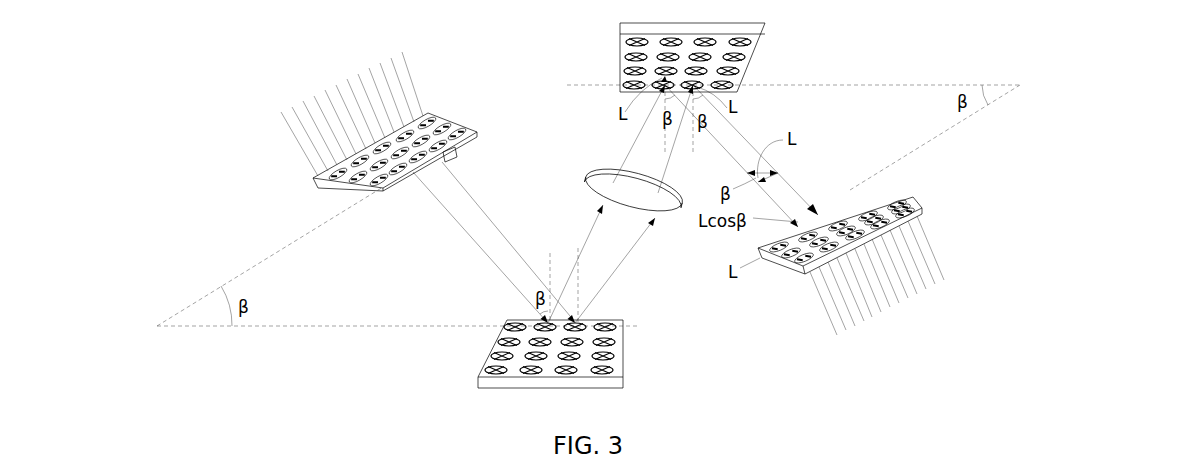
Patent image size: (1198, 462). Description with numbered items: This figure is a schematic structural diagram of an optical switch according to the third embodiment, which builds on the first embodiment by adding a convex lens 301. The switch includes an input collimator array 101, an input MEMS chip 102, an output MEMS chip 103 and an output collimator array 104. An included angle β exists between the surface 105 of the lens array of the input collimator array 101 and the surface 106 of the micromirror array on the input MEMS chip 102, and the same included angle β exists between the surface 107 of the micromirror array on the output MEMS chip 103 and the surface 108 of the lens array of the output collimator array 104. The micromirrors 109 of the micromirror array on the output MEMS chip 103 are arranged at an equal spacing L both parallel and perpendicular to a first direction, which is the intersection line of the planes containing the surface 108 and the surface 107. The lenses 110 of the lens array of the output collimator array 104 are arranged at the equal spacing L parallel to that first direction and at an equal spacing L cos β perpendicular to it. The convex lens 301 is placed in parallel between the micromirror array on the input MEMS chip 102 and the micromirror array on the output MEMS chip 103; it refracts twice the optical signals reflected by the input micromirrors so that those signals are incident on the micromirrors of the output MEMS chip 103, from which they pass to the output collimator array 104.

The input collimator array 101 is at (460, 125).
The input MEMS chip 102 is at (612, 382).
The output MEMS chip 103 is at (632, 29).
The output collimator array 104 is at (780, 260).
The surface of a lens array of the input collimator array 105 is at (337, 190).
The surface of a micromirror array on the input MEMS chip 106 is at (617, 362).
The surface of a micromirror array on the output MEMS chip 107 is at (625, 52).
The surface of a lens array of the output collimator array 108 is at (795, 258).
The micromirrors 109 is at (738, 72).
The lenses 110 is at (880, 210).
The convex lens 301 is at (605, 178).